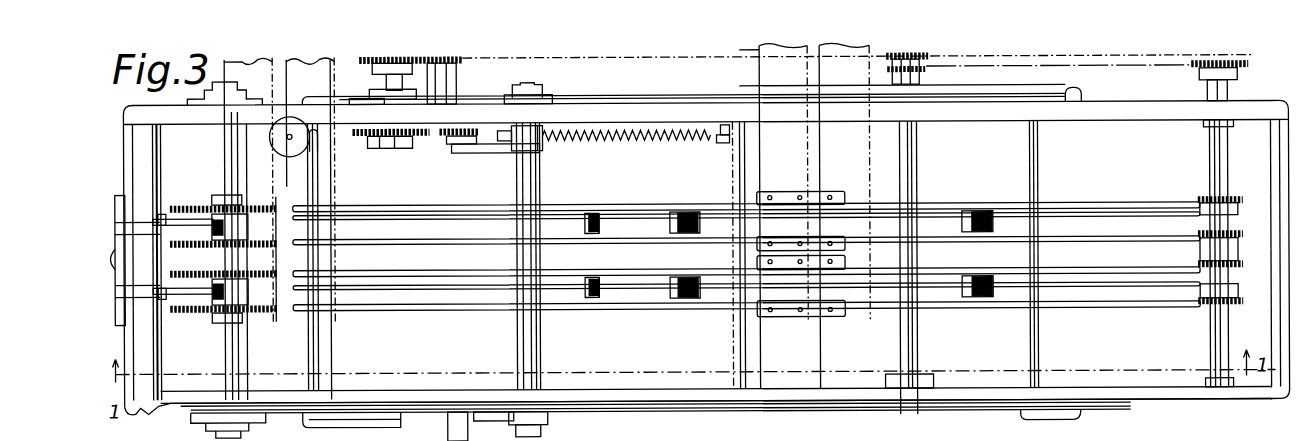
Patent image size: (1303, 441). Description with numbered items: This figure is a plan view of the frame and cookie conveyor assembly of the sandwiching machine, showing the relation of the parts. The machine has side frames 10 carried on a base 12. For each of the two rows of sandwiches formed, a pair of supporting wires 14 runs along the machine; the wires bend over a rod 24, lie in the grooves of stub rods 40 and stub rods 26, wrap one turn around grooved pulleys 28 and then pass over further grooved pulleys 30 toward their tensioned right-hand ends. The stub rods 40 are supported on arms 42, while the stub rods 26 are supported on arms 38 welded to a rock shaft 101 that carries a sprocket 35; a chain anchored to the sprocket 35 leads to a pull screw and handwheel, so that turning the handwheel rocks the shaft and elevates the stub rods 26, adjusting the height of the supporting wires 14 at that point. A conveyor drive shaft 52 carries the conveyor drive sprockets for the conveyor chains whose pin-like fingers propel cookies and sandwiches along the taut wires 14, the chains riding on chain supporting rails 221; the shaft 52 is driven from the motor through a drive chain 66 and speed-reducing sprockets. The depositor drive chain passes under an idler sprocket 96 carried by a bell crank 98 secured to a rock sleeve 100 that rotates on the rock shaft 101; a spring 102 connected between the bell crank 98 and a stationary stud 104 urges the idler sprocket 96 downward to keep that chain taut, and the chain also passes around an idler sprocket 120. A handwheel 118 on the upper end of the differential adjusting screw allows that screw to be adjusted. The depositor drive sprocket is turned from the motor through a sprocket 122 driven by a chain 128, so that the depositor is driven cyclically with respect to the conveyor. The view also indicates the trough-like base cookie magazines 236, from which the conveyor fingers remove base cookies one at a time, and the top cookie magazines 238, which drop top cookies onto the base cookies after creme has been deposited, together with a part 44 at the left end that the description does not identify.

The side frames 10 is at (1112, 114).
The base 12 is at (788, 418).
The supporting wires 14 is at (636, 216).
The rod 24 is at (122, 208).
The stub rods 26 is at (597, 234).
The grooved pulleys 28 is at (690, 234).
The grooved pulleys 30 is at (968, 234).
The sprocket 35 is at (560, 432).
The arms 38 is at (590, 212).
The stub rods 40 is at (214, 216).
The arms 42 is at (166, 216).
The side plate 44 is at (160, 356).
The conveyor drive shaft 52 is at (1218, 333).
The drive chain 66 is at (1104, 51).
The idler sprocket 96 is at (443, 140).
The bell crank 98 is at (480, 152).
The rock sleeve 100 is at (546, 148).
The rock shaft 101 is at (526, 172).
The spring 102 is at (632, 135).
The stationary stud 104 is at (723, 145).
The handwheel 118 is at (282, 148).
The idler sprocket 120 is at (352, 128).
The sprocket 122 is at (418, 138).
The chain 128 is at (582, 57).
The chain supporting rails 221 is at (1155, 201).
The base cookie magazines 236 is at (256, 51).
The top cookie magazines 238 is at (872, 48).